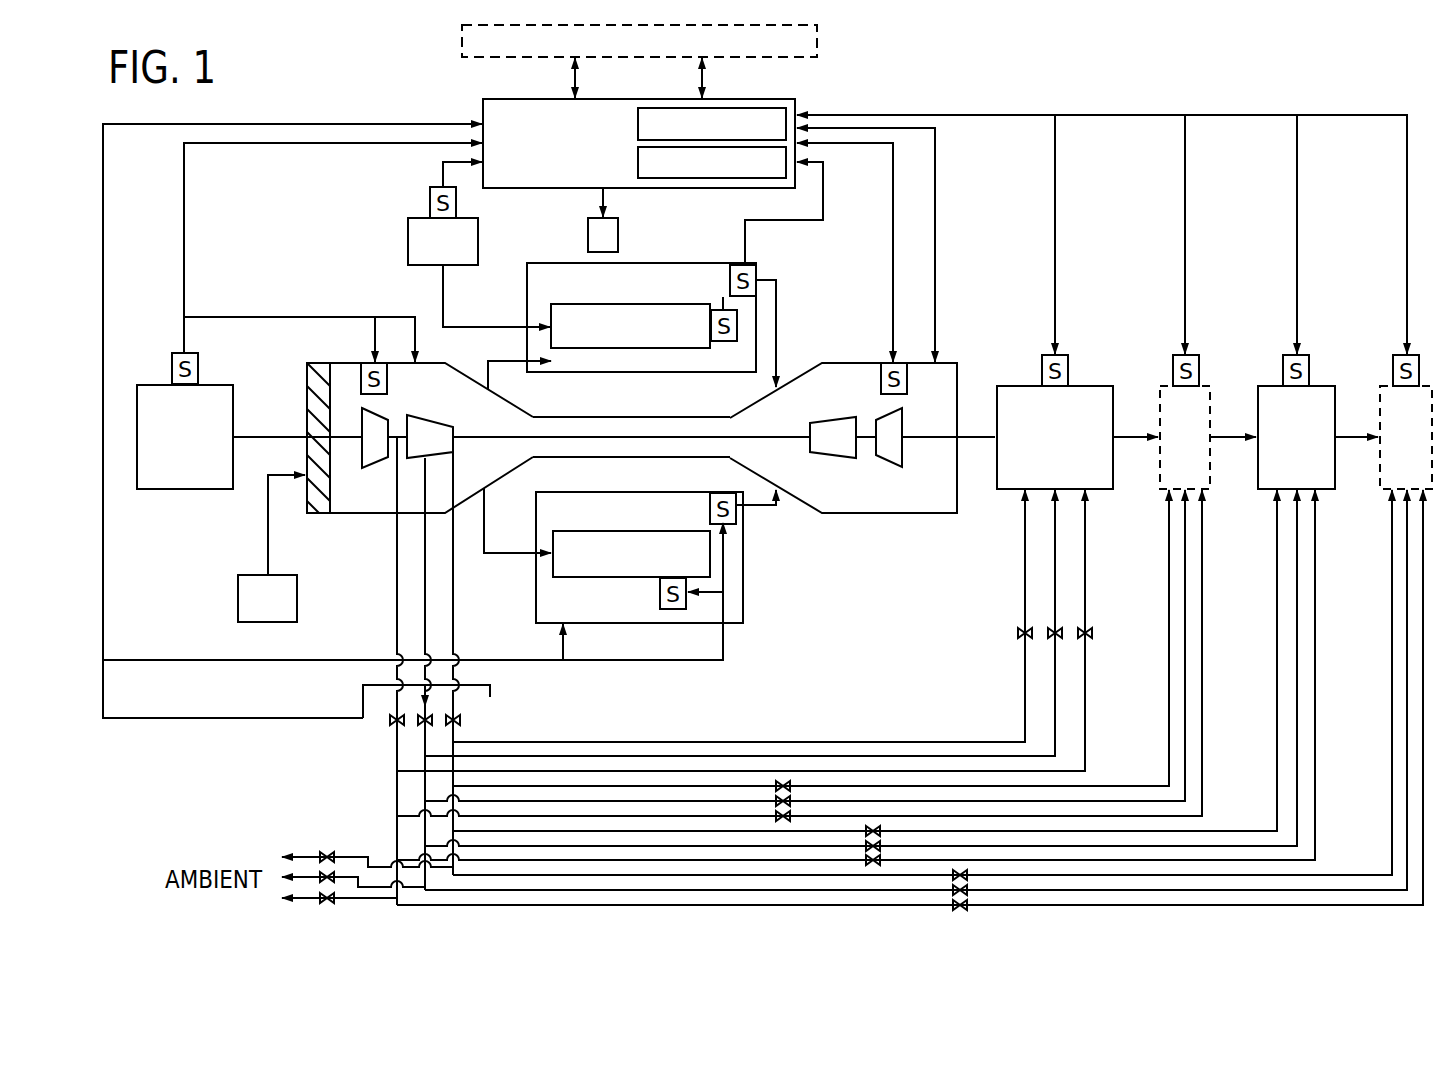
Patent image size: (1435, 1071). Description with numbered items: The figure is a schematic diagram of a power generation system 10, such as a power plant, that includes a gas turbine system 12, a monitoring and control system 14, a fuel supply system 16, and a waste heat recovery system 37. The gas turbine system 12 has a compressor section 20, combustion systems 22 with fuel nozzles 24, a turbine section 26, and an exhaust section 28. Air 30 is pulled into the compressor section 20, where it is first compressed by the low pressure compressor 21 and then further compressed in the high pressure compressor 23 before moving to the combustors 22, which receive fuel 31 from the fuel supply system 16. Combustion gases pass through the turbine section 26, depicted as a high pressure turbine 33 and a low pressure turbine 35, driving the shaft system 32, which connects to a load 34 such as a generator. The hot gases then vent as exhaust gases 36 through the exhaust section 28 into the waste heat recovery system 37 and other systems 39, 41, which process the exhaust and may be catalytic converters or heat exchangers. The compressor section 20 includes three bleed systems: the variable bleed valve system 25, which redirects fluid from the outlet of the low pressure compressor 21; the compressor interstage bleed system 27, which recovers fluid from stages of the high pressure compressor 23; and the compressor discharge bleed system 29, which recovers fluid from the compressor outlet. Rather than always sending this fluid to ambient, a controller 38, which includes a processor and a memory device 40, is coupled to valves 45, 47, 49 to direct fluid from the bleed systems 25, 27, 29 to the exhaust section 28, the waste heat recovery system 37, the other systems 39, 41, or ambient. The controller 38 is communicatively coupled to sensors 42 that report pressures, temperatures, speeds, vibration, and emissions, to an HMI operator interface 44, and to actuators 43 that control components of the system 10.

The power generation system 10 is at (1236, 51).
The gas turbine system 12 is at (523, 560).
The monitoring and control system 14 is at (838, 41).
The fuel supply system 16 is at (384, 236).
The compressor section 20 is at (345, 362).
The low pressure compressor 21 is at (362, 450).
The combustion system 22 is at (702, 263).
The high pressure compressor 23 is at (430, 415).
The fuel nozzle 24 is at (598, 349).
The variable bleed valve system 25 is at (397, 562).
The turbine section 26 is at (873, 514).
The compressor interstage bleed system 27 is at (425, 583).
The exhaust section 28 is at (1005, 490).
The compressor discharge bleed system 29 is at (453, 605).
The air 30 is at (238, 598).
The fuel 31 is at (420, 266).
The shaft system 32 is at (304, 468).
The high pressure turbine 33 is at (847, 417).
The load 34 is at (185, 490).
The low pressure turbine 35 is at (887, 463).
The exhaust gases 36 is at (777, 335).
The waste heat recovery system 37 is at (1257, 470).
The controller 38 is at (523, 98).
The other system 39 is at (1158, 470).
The memory device 40 is at (712, 178).
The other system 41 is at (1380, 468).
The sensor 42 is at (172, 370).
The actuator 43 is at (587, 234).
The HMI operator interface 44 is at (462, 46).
The valve 45 is at (391, 719).
The valve 47 is at (422, 727).
The valve 49 is at (461, 720).